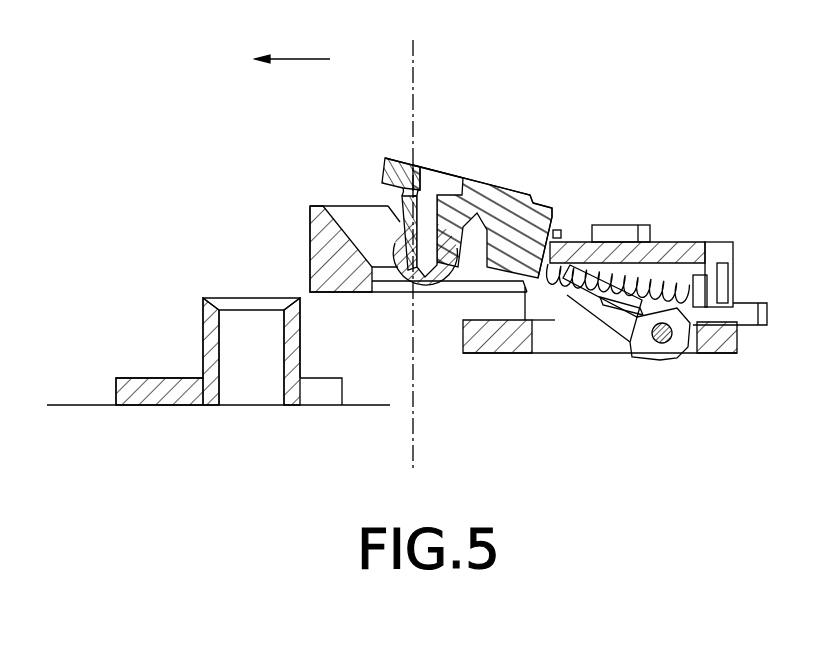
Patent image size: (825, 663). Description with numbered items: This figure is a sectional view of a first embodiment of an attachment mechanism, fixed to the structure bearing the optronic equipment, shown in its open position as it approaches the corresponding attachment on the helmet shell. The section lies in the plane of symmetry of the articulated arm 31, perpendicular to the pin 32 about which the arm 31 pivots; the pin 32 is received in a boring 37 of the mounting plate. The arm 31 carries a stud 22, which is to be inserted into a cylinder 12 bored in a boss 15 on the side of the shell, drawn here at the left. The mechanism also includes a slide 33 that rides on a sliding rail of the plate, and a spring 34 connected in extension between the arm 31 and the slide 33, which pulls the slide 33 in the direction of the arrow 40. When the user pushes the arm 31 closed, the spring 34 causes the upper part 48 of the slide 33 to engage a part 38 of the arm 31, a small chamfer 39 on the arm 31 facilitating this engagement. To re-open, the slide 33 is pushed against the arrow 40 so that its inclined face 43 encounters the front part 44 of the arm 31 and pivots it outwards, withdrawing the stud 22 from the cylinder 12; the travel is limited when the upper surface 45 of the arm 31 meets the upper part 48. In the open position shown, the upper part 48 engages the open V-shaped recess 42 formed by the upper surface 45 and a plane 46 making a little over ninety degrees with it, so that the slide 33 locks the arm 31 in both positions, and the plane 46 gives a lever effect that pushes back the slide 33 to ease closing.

The cylinder 12 is at (203, 330).
The boss 15 is at (166, 398).
The stud 22 is at (443, 290).
The arm 31 is at (404, 157).
The pin 32 is at (655, 360).
The slide 33 is at (310, 235).
The spring 34 is at (630, 342).
The boring 37 is at (690, 358).
The part of the arm 38 is at (553, 205).
The chamfer 39 is at (560, 223).
The arrow 40 is at (292, 43).
The V-shaped recess 42 is at (578, 240).
The inclined face 43 is at (340, 207).
The front part of the arm 44 is at (383, 176).
The upper surface of the arm 45 is at (567, 300).
The plane 46 is at (563, 237).
The upper part of the slide 48 is at (665, 243).